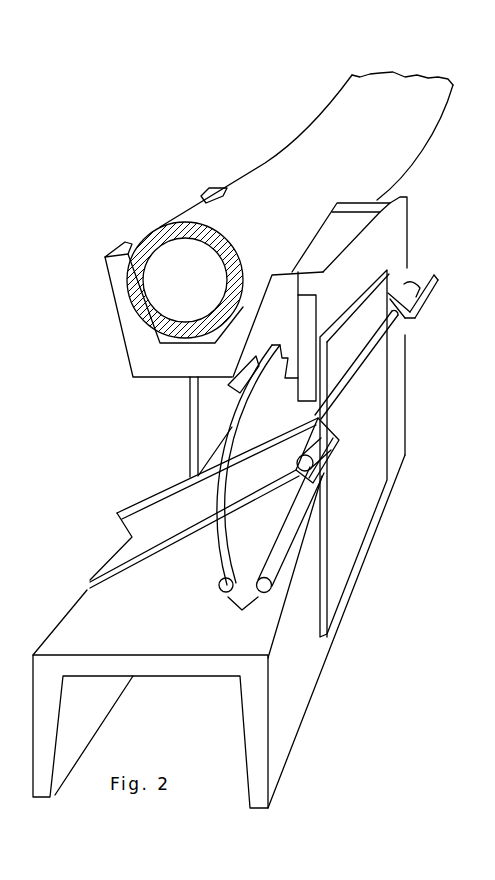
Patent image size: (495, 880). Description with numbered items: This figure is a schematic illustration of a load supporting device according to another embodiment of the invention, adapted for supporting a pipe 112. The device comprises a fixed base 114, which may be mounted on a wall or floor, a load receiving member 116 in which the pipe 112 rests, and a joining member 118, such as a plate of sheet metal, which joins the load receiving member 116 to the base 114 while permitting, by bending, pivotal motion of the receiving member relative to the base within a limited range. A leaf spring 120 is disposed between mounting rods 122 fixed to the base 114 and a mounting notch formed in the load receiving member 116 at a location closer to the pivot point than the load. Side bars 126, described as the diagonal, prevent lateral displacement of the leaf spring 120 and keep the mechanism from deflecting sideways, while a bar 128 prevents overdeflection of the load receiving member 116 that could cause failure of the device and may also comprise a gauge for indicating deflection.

The pipe 112 is at (274, 168).
The fixed base 114 is at (305, 675).
The load receiving member 116 is at (279, 325).
The joining member 118 is at (362, 487).
The leaf spring 120 is at (281, 415).
The mounting rods 122 is at (271, 550).
The side bars 126 is at (185, 498).
The bar 128 is at (190, 416).